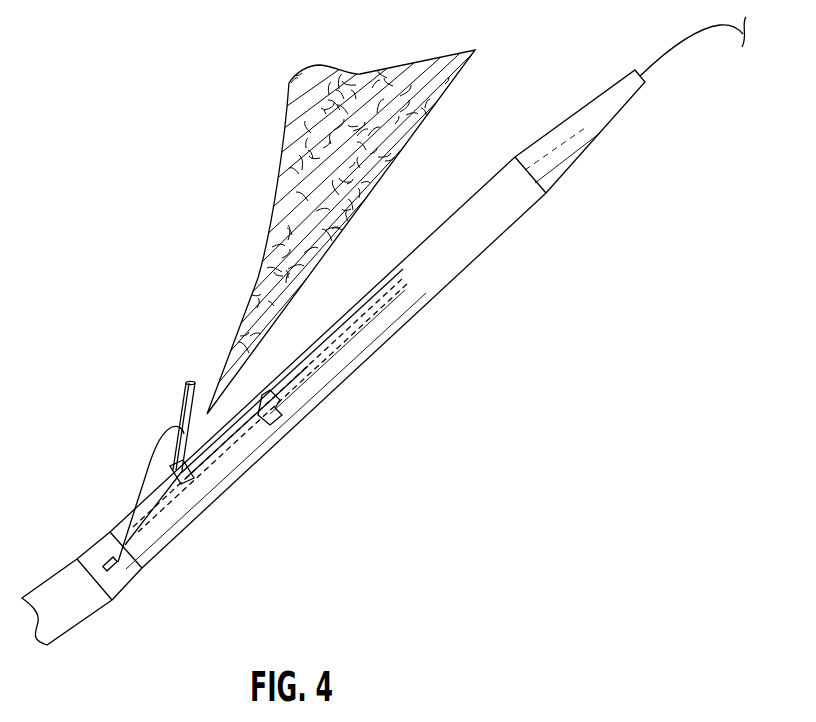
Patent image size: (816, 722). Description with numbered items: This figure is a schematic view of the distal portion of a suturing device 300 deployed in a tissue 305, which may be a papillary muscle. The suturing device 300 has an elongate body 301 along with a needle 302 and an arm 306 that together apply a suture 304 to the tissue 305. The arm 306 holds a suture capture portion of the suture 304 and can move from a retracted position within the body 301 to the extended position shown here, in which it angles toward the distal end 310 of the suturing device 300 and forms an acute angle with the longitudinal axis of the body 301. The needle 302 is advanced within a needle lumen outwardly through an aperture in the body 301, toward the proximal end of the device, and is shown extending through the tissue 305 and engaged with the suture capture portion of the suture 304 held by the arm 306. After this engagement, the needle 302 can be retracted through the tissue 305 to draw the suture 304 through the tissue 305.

The suturing device 300 is at (525, 402).
The elongate body 301 is at (412, 313).
The needle 302 is at (280, 425).
The suture 304 is at (150, 462).
The tissue 305 is at (367, 163).
The arm 306 is at (183, 392).
The distal end 310 is at (623, 72).